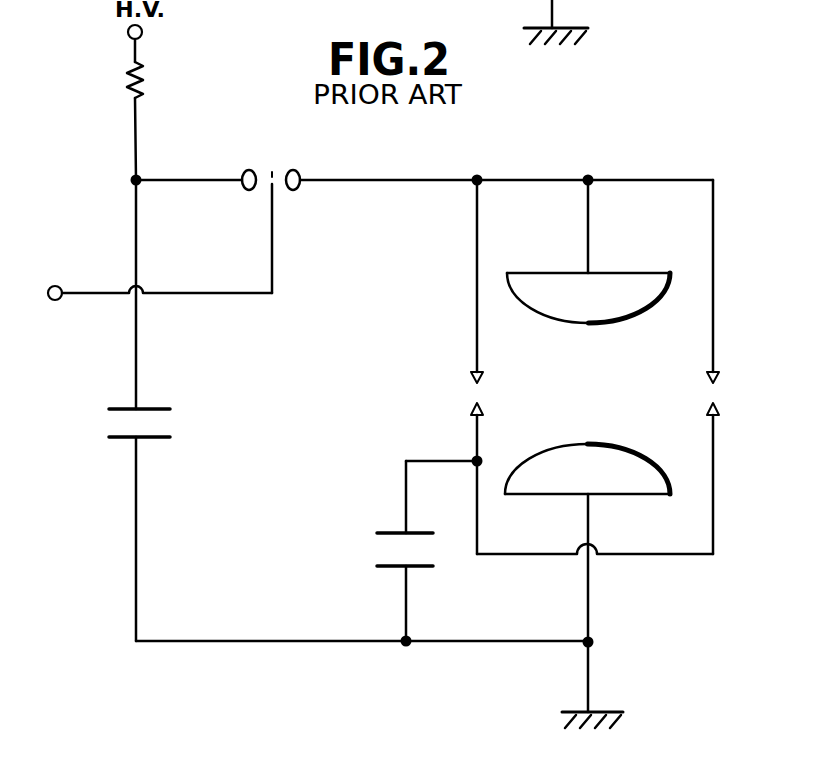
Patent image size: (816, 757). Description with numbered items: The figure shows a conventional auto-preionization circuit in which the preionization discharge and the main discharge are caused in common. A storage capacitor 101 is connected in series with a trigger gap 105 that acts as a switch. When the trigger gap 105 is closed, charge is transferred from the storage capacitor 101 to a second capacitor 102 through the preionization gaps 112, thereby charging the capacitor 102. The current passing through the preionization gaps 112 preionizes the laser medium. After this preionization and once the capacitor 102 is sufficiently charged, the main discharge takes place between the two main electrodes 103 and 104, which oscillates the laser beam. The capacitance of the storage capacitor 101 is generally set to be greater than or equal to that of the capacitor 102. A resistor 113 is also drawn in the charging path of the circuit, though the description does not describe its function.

The storage capacitor 101 is at (130, 442).
The capacitor 102 is at (397, 574).
The main electrode 103 is at (588, 323).
The main electrode 104 is at (586, 443).
The trigger gap 105 is at (270, 172).
The preionization gaps 112 is at (474, 394).
The charging resistor 113 is at (146, 70).